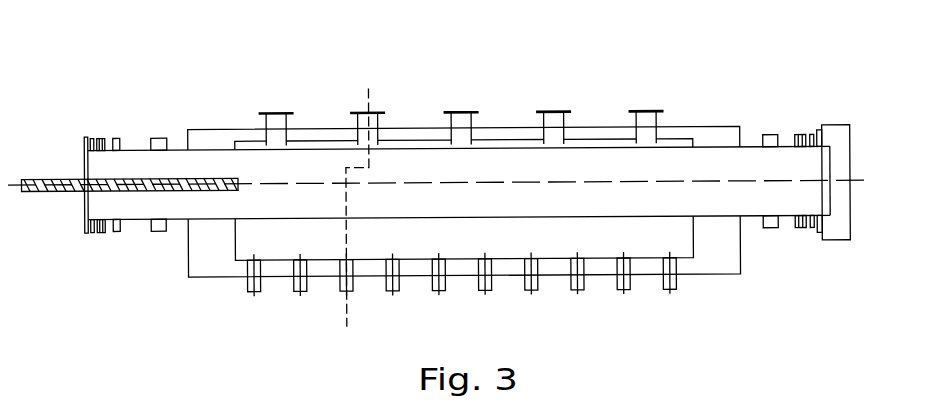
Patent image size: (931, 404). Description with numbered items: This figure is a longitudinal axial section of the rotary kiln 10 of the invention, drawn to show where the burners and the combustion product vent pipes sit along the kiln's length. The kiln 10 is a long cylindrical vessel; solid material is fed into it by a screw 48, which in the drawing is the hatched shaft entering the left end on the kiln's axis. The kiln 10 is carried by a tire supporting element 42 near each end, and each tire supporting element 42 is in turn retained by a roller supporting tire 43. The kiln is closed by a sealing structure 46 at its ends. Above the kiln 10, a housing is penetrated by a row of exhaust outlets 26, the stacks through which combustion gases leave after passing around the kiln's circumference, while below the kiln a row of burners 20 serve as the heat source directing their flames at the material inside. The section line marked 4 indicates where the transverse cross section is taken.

The kiln 10 is at (507, 149).
The burner 20 is at (670, 287).
The exhaust outlet 26 is at (463, 111).
The tire supporting element 42 is at (156, 136).
The roller supporting tire 43 is at (117, 233).
The sealing structure 46 is at (101, 136).
The screw 48 is at (205, 189).
The section line 4- 4 is at (285, 341).